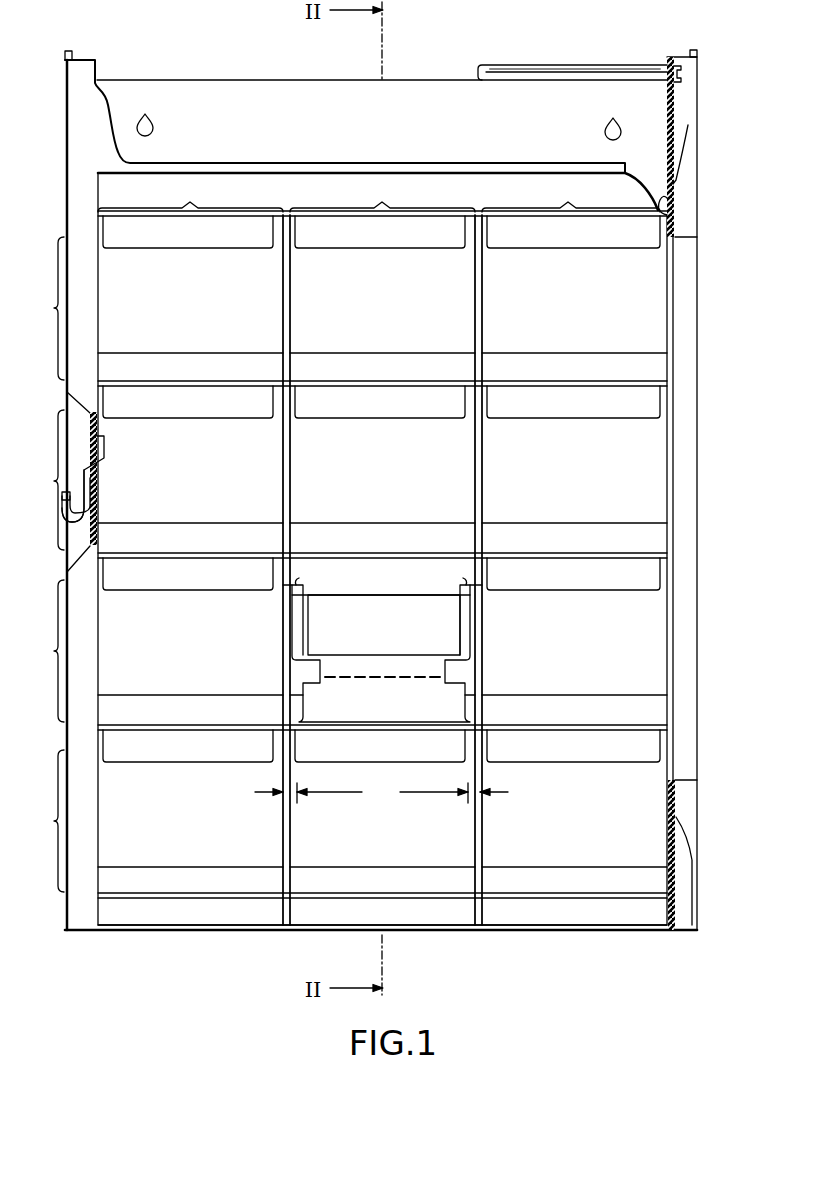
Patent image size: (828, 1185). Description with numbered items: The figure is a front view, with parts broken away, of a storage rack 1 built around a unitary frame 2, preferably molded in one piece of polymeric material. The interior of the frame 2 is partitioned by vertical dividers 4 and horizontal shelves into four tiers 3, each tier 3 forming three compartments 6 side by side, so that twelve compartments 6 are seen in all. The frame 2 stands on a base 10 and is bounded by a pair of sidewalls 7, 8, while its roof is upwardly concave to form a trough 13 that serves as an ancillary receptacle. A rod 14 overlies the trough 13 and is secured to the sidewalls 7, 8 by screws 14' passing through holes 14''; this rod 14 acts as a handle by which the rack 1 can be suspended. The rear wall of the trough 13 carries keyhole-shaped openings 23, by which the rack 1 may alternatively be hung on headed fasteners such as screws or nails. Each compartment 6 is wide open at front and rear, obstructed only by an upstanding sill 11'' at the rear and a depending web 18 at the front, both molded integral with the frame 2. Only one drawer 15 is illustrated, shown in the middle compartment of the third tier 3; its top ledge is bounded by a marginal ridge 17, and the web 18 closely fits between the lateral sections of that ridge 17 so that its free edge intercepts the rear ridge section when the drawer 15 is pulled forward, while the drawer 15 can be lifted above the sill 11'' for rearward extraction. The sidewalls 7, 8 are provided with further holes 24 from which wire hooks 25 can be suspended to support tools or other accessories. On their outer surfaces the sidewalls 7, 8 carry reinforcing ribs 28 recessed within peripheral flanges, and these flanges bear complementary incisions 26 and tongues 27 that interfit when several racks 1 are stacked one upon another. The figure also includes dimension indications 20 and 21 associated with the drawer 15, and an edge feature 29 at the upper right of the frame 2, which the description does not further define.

The storage rack 1 is at (567, 58).
The unitary frame 2 is at (305, 97).
The tier 3 is at (50, 564).
The vertical divider 4 is at (385, 570).
The compartment 6 is at (379, 195).
The sidewall 7 is at (67, 152).
The sidewall 8 is at (684, 296).
The base 10 is at (455, 905).
The upstanding sill 11'' is at (382, 589).
The trough 13 is at (440, 105).
The rod 14 is at (572, 45).
The screw 14' is at (712, 67).
The hole 14'' is at (659, 121).
The drawer 15 is at (463, 618).
The marginal ridge 17 is at (382, 532).
The depending web 18 is at (381, 513).
The drawer width 20 is at (381, 792).
The clearance 21 is at (382, 816).
The keyhole-shaped opening 23 is at (145, 114).
The hole 24 is at (100, 455).
The wire hook 25 is at (70, 515).
The incision 26 is at (697, 928).
The tongue 27 is at (70, 51).
The reinforcing rib 28 is at (688, 125).
The tab 29 is at (672, 196).